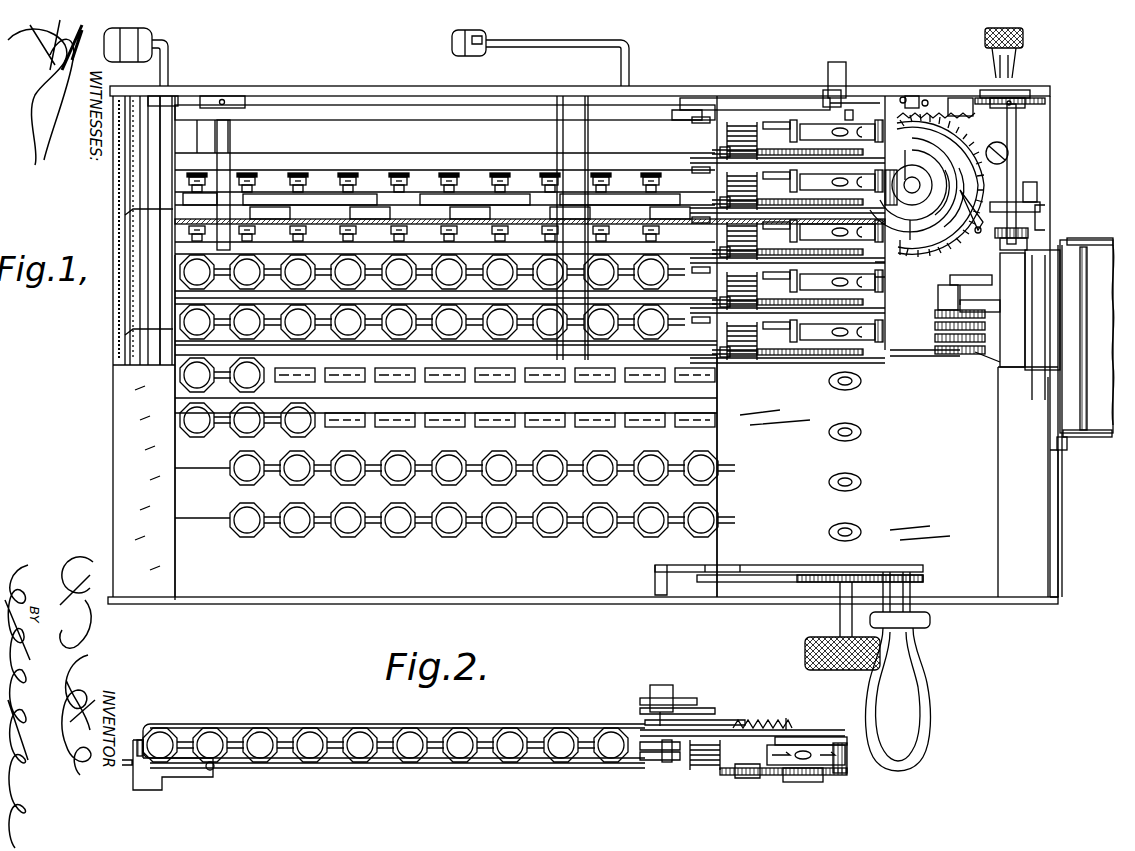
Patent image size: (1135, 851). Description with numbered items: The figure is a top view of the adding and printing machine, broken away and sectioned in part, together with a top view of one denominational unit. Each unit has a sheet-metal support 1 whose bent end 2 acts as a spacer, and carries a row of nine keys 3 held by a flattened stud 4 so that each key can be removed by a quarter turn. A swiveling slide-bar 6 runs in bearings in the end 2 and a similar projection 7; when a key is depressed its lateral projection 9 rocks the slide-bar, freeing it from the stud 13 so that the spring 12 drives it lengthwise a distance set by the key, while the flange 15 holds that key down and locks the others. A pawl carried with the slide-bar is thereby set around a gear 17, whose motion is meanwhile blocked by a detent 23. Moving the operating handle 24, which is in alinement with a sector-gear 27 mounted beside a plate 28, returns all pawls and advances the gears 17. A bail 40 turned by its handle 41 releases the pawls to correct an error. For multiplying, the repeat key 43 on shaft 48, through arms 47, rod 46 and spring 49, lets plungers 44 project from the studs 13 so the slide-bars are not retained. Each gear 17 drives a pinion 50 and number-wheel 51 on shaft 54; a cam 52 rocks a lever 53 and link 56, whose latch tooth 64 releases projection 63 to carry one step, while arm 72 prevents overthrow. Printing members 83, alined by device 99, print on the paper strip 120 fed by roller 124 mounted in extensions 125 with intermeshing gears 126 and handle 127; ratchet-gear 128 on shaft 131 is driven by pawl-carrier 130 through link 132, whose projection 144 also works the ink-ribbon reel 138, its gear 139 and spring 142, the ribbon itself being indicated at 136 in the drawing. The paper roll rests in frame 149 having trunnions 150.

In FIG. 1, the support 1 is at (672, 170).
In FIG. 2, the support 1 is at (340, 726).
In FIG. 1, the bent end 2 is at (165, 232).
In FIG. 2, the bent end 2 is at (130, 782).
In FIG. 1, the keys 3 is at (358, 465).
In FIG. 2, the keys 3 is at (307, 738).
In FIG. 1, the stud 4 is at (522, 236).
In FIG. 1, the swiveling slide-bar 6 is at (680, 214).
In FIG. 2, the swiveling slide-bar 6 is at (648, 758).
In FIG. 2, the projection 7 is at (664, 760).
In FIG. 1, the lateral projection 9 is at (486, 188).
In FIG. 1, the spring 12 is at (522, 110).
In FIG. 1, the stud 13 is at (172, 292).
In FIG. 2, the stud 13 is at (207, 772).
In FIG. 1, the flange 15 is at (535, 346).
In FIG. 2, the flange 15 is at (443, 767).
In FIG. 1, the gear 17 is at (120, 352).
In FIG. 2, the gear 17 is at (775, 776).
In FIG. 1, the detent 23 is at (735, 140).
In FIG. 2, the detent 23 is at (693, 778).
In FIG. 1, the operating handle 24 is at (783, 584).
In FIG. 1, the sector-gear 27 is at (742, 98).
In FIG. 1, the plate 28 is at (686, 112).
In FIG. 1, the bail 40 is at (580, 140).
In FIG. 1, the operating handle 41 is at (533, 48).
In FIG. 1, the repeat key 43 is at (144, 42).
In FIG. 2, the plunger 44 is at (214, 766).
In FIG. 1, the rod 46 is at (192, 98).
In FIG. 1, the arms 47 is at (175, 98).
In FIG. 1, the shaft 48 is at (160, 195).
In FIG. 1, the spring 49 is at (143, 230).
In FIG. 1, the pinion 50 is at (950, 376).
In FIG. 2, the pinion 50 is at (820, 777).
In FIG. 1, the number-wheel 51 is at (893, 288).
In FIG. 2, the number-wheel 51 is at (845, 760).
In FIG. 1, the cam 52 is at (846, 116).
In FIG. 2, the cam 52 is at (825, 740).
In FIG. 1, the lever 53 is at (802, 132).
In FIG. 2, the lever 53 is at (788, 740).
In FIG. 1, the shaft 54 is at (838, 62).
In FIG. 2, the link 56 is at (736, 730).
In FIG. 2, the lateral projection 63 is at (680, 720).
In FIG. 2, the tooth 64 is at (680, 724).
In FIG. 2, the arm 72 is at (670, 702).
In FIG. 1, the printing members 83 is at (960, 268).
In FIG. 1, the alining device 99 is at (940, 297).
In FIG. 1, the paper strip 120 is at (1087, 337).
In FIG. 1, the sheet-feeding roller 124 is at (1007, 366).
In FIG. 1, the extensions 125 is at (1040, 207).
In FIG. 1, the intermeshing gears 126 is at (1047, 232).
In FIG. 1, the operating handle 127 is at (1007, 30).
In FIG. 1, the ratchet-gear 128 is at (1048, 98).
In FIG. 1, the pawl-carrier 130 is at (1030, 90).
In FIG. 1, the shaft 131 is at (1012, 128).
In FIG. 1, the link 132 is at (918, 98).
In FIG. 1, the link 136 is at (982, 358).
In FIG. 1, the reel 138 is at (990, 180).
In FIG. 1, the gear 139 is at (945, 138).
In FIG. 1, the spring 142 is at (936, 115).
In FIG. 1, the projection 144 is at (930, 102).
In FIG. 1, the frame 149 is at (1113, 433).
In FIG. 1, the trunnions 150 is at (1057, 470).